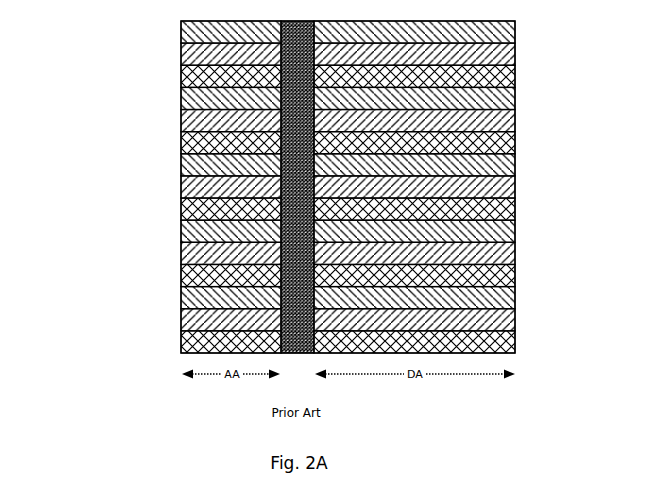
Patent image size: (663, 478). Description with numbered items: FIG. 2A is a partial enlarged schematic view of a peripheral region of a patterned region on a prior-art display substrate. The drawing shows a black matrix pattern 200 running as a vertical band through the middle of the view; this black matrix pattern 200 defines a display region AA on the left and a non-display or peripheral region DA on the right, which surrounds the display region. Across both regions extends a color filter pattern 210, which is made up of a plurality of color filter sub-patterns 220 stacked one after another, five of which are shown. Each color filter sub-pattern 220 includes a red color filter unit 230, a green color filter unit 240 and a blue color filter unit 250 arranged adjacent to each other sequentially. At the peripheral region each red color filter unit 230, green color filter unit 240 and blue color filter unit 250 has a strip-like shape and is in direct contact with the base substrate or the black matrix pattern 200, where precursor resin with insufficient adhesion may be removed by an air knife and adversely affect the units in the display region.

The black matrix pattern 200 is at (297, 187).
The color filter pattern 210 is at (112, 54).
The color filter sub-pattern 220 is at (315, 187).
The red color filter unit 230 is at (333, 165).
The green color filter unit 240 is at (333, 187).
The blue color filter unit 250 is at (333, 209).